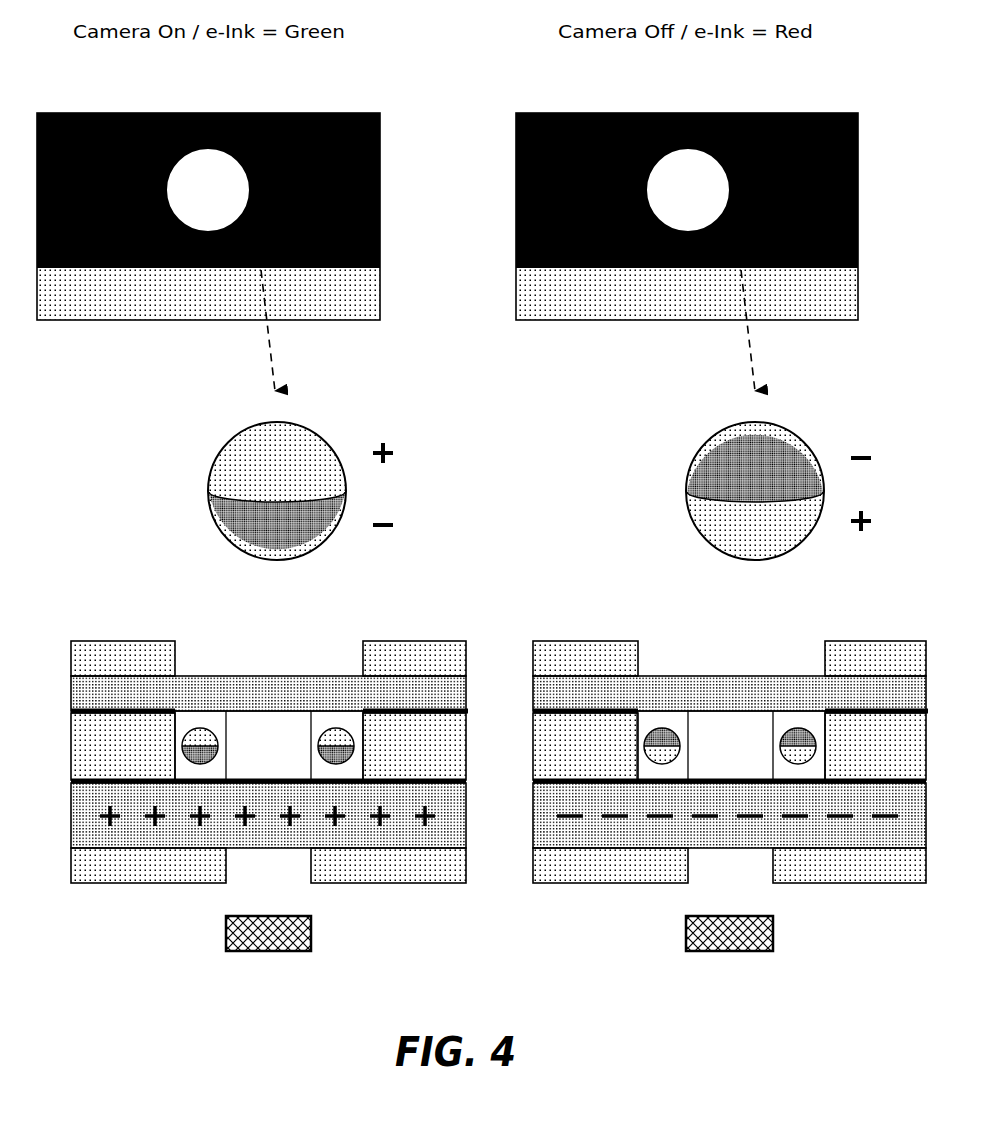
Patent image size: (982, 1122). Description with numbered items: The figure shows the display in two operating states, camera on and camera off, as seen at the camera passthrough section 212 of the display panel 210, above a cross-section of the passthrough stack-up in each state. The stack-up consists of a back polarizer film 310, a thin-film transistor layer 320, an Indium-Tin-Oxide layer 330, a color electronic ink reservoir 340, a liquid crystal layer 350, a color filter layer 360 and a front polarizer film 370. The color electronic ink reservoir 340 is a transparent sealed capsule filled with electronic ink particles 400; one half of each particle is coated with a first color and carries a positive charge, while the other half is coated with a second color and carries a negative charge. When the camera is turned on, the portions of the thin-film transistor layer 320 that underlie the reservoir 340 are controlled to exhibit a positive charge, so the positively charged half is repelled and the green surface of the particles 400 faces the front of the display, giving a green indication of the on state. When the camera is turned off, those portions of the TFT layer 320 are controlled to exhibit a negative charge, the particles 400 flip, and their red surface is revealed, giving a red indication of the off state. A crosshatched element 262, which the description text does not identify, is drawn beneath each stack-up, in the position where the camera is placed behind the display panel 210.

The display panel 210 is at (45, 104).
The camera passthrough section 212 is at (110, 104).
The color electronic ink reservoir 340 is at (230, 213).
The electronic ink particles 400 is at (221, 437).
The front polarizer film 370 is at (63, 646).
The color filter layer 360 is at (63, 677).
The liquid crystal layer 350 is at (63, 707).
The Indium-Tin-Oxide (ITO) layer 330 is at (63, 770).
The thin-film transistor (TFT) layer 320 is at (63, 800).
The back polarizer film 310 is at (63, 850).
The camera 262 is at (218, 926).